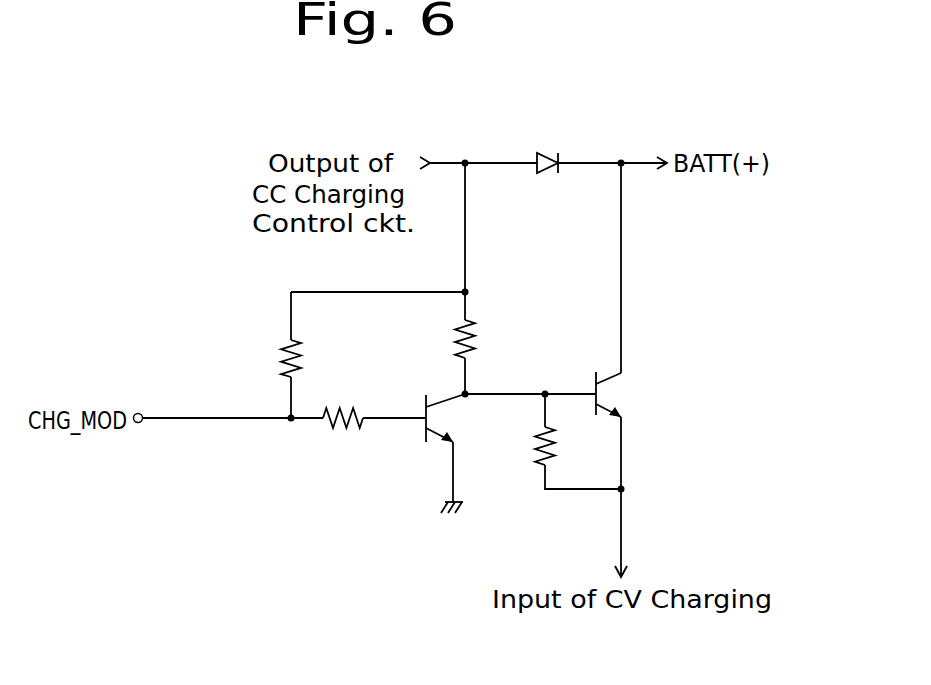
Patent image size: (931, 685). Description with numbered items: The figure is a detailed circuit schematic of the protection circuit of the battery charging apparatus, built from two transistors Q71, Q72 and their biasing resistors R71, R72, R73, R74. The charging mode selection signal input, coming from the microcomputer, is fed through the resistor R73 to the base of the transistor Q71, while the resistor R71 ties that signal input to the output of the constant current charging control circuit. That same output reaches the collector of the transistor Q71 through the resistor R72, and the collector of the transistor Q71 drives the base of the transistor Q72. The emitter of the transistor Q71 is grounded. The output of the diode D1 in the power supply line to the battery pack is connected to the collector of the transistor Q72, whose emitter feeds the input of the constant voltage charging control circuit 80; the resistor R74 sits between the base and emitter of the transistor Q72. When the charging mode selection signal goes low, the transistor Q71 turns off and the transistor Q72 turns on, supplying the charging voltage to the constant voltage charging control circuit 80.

The diode D1 is at (548, 146).
The resistor R71 is at (268, 358).
The resistor R72 is at (490, 339).
The resistor R73 is at (344, 438).
The resistor R74 is at (570, 446).
The transistor Q71 is at (457, 418).
The transistor Q72 is at (627, 394).
The constant voltage (CV) charging control circuit 80 is at (622, 633).